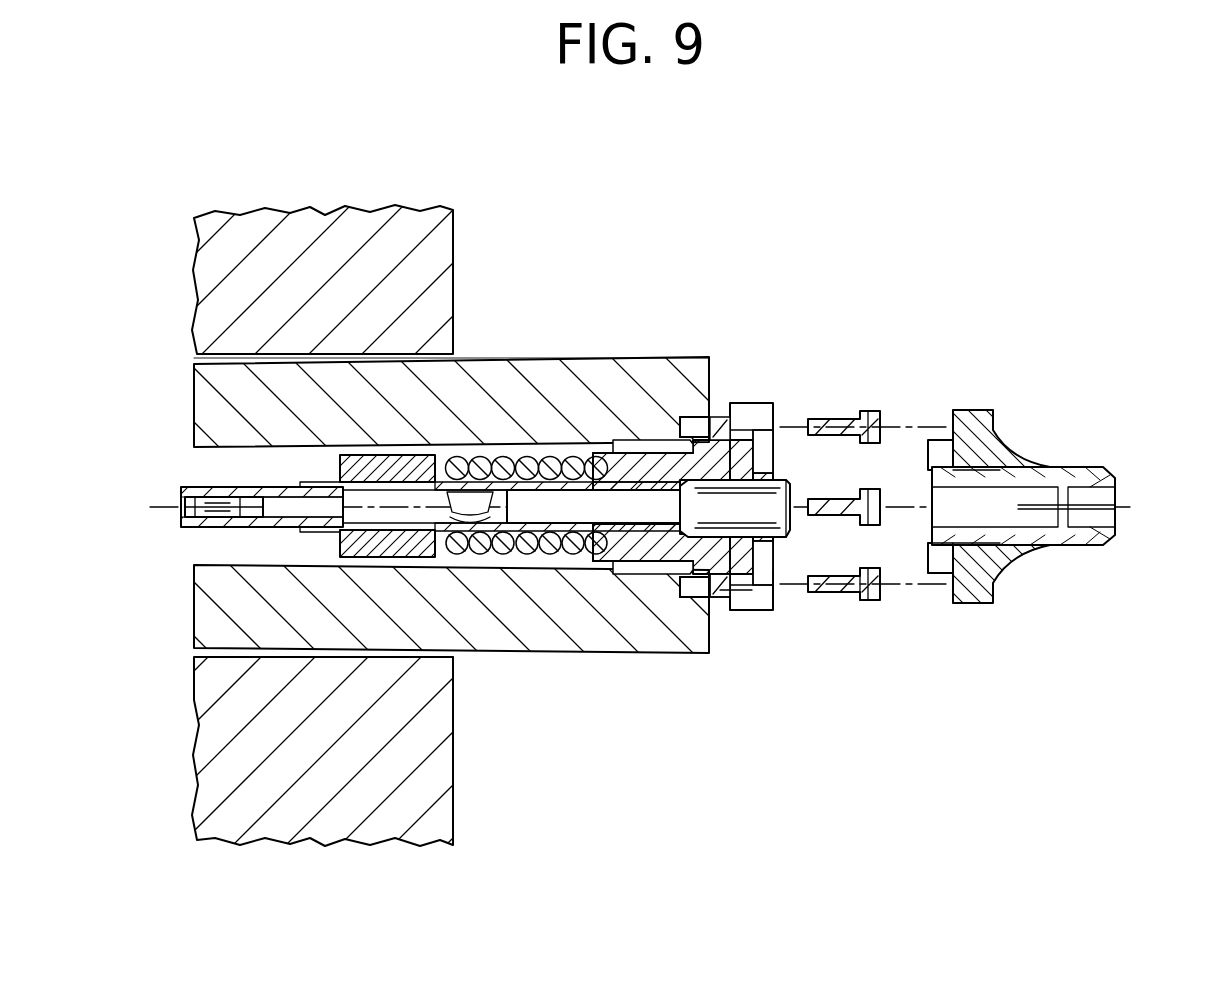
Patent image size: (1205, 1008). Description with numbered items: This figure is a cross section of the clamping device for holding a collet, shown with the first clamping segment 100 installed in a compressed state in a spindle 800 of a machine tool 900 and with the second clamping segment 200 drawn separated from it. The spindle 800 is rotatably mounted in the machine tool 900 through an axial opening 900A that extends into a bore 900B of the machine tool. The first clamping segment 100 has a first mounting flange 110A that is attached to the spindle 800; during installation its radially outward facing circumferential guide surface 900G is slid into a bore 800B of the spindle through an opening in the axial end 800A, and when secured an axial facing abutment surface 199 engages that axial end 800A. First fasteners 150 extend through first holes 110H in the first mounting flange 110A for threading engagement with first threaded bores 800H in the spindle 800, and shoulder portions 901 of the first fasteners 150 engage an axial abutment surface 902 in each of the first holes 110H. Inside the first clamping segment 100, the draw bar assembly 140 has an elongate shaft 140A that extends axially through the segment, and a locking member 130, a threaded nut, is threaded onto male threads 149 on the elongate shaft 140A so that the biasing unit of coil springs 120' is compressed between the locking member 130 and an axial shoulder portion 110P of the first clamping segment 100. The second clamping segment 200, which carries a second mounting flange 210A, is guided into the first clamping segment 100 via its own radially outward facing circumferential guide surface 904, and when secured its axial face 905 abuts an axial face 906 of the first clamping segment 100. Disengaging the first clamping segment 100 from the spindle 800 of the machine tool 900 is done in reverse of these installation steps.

The machine tool 900 is at (331, 229).
The bore 900B is at (256, 362).
The spindle 800 is at (518, 376).
The axial end 800A is at (713, 403).
The bore 800B is at (500, 567).
The first threaded bores 800H is at (685, 415).
The locking member 130 is at (343, 550).
The male threads 149 is at (313, 484).
The elongate shaft 140A is at (321, 486).
The draw bar assembly 140 is at (514, 474).
The first clamping segment 100 is at (610, 447).
The first mounting flange 110A is at (736, 392).
The first holes 110H is at (716, 600).
The axial shoulder portion 110P is at (600, 555).
The axial facing abutment surface 199 is at (718, 590).
The radially outward facing circumferential guide surface 900G is at (700, 574).
The axial opening 900A is at (470, 680).
The coil springs 120' is at (397, 720).
The first fasteners 150 is at (830, 415).
The axial face 906 is at (780, 595).
The axial abutment surface 902 is at (752, 608).
The shoulder portions 901 is at (855, 603).
The second clamping segment 200 is at (1080, 412).
The second mounting flange 210A is at (973, 405).
The radially outward facing circumferential guide surface 904 is at (937, 588).
The axial face 905 is at (943, 603).